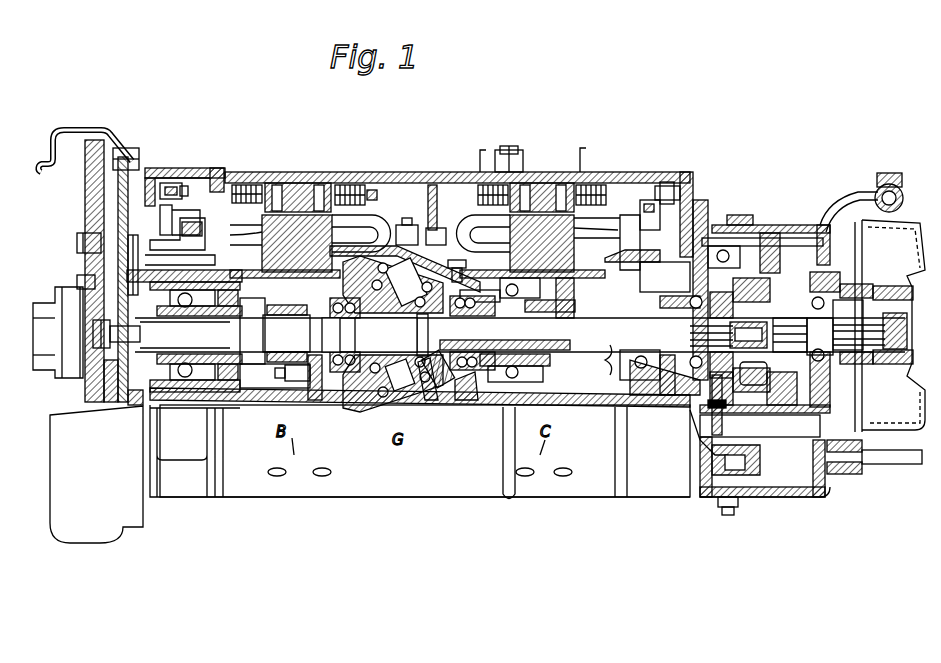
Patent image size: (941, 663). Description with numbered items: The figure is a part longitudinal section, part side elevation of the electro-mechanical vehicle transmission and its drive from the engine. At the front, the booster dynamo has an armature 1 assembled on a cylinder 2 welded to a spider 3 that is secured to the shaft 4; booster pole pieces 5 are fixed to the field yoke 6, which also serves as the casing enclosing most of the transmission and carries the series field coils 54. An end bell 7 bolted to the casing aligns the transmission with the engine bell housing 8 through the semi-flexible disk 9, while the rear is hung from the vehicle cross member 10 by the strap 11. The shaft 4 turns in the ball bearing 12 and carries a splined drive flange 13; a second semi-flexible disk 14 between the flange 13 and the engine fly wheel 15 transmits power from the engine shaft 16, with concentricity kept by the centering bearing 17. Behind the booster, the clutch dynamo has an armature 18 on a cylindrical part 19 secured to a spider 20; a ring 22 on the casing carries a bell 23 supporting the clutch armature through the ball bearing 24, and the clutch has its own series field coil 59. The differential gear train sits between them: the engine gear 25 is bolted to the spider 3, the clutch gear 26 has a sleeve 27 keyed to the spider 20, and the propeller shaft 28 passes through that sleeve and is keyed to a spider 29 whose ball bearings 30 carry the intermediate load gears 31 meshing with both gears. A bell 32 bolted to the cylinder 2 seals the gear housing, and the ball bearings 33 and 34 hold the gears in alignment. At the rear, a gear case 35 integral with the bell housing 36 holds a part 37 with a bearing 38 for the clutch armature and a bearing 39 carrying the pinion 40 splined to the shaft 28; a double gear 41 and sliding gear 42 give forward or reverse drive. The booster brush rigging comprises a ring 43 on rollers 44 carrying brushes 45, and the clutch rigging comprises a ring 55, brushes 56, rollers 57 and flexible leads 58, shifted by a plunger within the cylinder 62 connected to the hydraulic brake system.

The armature 1 is at (280, 247).
The cylinder 2 is at (264, 399).
The spider 3 is at (286, 342).
The shaft 4 is at (253, 350).
The pole pieces 5 is at (285, 230).
The field yoke 6 is at (300, 172).
The end bell 7 is at (200, 175).
The engine bell housing 8 is at (100, 130).
The semi-flexible disk 9 is at (119, 187).
The vehicle cross member 10 is at (483, 158).
The strap 11 is at (503, 452).
The ball bearing 12 is at (200, 360).
The drive flange 13 is at (182, 308).
The semi-flexible disk 14 is at (110, 402).
The engine fly wheel 15 is at (88, 190).
The engine shaft 16 is at (128, 248).
The centering bearing 17 is at (116, 334).
The armature 18 is at (528, 228).
The cylindrical part 19 is at (532, 230).
The spider 20 is at (572, 287).
The ring 22 is at (440, 203).
The bell 23 is at (472, 284).
The ball bearing 24 is at (520, 278).
The gear 25 is at (345, 392).
The gear 26 is at (444, 362).
The sleeve 27 is at (530, 350).
The propeller shaft 28 is at (578, 335).
The spider 29 is at (393, 304).
The ball bearings 30 is at (380, 404).
The intermediate gears 31 is at (433, 402).
The bell 32 is at (464, 402).
The ball bearing 33 is at (474, 312).
The ball bearing 34 is at (341, 335).
The gear case 35 is at (773, 500).
The bell housing 36 is at (705, 205).
The part 37 is at (666, 398).
The bearing 38 is at (625, 376).
The bearing 39 is at (665, 375).
The pinion 40 is at (722, 378).
The double gear 41 is at (722, 462).
The sliding gear 42 is at (771, 368).
The ring 43 is at (175, 212).
The rollers 44 is at (172, 183).
The brushes 45 is at (208, 218).
The field coil 54 is at (352, 185).
The ring 55 is at (658, 203).
The brushes 56 is at (632, 222).
The rollers 57 is at (668, 185).
The flexible leads 58 is at (700, 420).
The series field coil 59 is at (588, 188).
The cylinder 62 is at (745, 235).